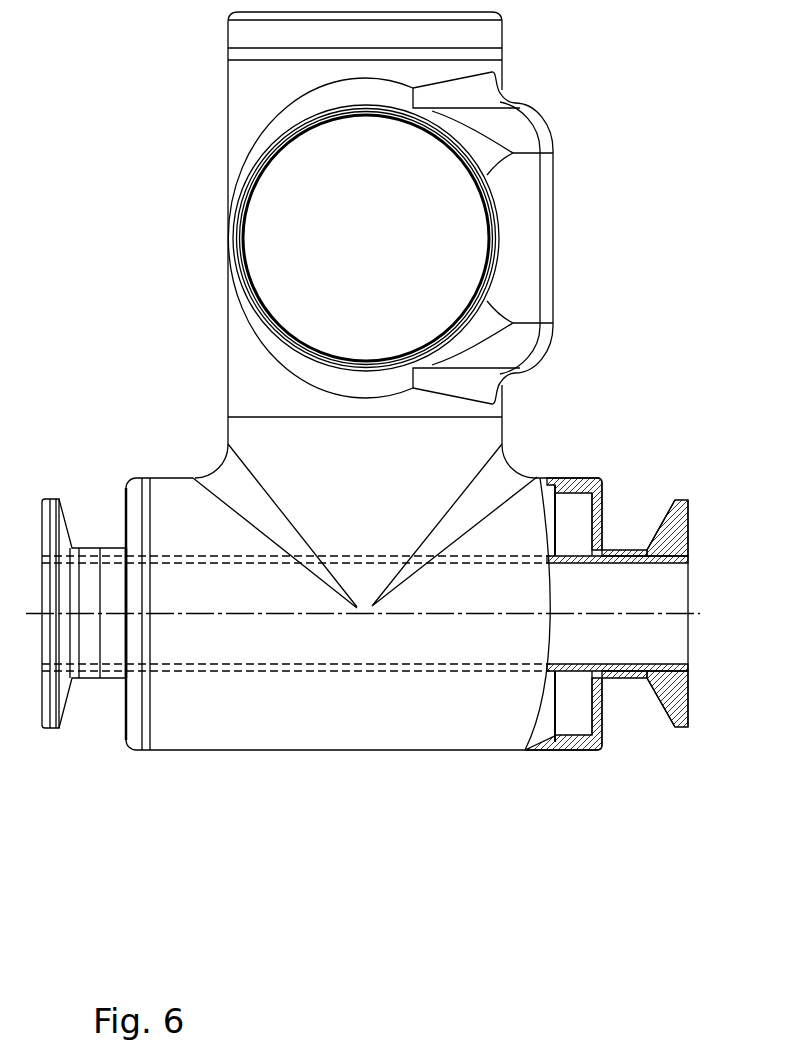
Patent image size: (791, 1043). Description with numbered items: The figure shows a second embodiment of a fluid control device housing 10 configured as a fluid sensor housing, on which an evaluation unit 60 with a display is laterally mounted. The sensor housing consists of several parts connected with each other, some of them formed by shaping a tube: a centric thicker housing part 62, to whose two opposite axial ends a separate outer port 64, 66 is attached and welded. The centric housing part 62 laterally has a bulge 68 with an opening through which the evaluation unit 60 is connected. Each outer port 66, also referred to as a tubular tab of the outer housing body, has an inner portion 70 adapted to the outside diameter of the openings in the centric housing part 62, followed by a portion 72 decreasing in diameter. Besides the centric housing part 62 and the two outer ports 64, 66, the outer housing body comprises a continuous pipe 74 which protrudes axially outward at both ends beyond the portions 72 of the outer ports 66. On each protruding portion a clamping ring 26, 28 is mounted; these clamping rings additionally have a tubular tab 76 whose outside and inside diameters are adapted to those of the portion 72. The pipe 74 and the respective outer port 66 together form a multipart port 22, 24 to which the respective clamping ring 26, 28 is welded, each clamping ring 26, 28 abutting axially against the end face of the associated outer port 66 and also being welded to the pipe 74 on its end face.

The fluid control device housing 10 is at (523, 478).
The multipart port 22 is at (118, 648).
The multipart port 24 is at (634, 529).
The clamping ring 26 is at (43, 505).
The clamping ring 28 is at (686, 532).
The evaluation unit 60 is at (540, 140).
The centric housing part 62 is at (380, 728).
The outer port 64 is at (140, 728).
The outer port 66 is at (597, 748).
The bulge 68 is at (282, 450).
The inner portion 70 is at (572, 747).
The portion decreasing in diameter 72 is at (612, 679).
The continuous pipe 74 is at (672, 567).
The tubular tab 76 is at (647, 546).